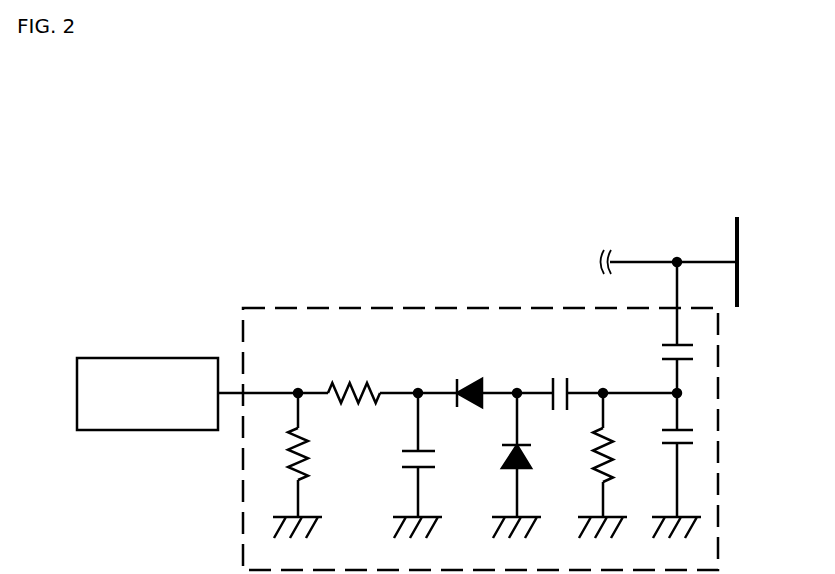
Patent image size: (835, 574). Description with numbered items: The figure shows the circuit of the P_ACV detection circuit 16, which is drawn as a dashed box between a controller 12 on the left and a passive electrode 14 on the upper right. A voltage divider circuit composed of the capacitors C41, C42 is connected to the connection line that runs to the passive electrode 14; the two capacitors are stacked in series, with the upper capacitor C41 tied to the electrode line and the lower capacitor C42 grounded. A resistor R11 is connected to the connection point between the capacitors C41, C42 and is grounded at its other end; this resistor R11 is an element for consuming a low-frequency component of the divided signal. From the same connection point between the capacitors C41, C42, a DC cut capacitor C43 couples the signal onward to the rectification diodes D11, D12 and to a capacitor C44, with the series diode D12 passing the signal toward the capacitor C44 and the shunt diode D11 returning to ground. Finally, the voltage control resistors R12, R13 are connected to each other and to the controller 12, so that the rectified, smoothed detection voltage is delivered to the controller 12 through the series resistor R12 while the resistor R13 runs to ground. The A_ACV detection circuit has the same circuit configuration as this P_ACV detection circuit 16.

The controller 12 is at (111, 357).
The passive electrode 14 is at (735, 236).
The P_ACV detection circuit 16 is at (281, 306).
The resistor R11 is at (595, 465).
The voltage control resistor R12 is at (354, 380).
The voltage control resistor R13 is at (309, 465).
The capacitor C41 is at (654, 327).
The capacitor C42 is at (665, 465).
The DC cut capacitor C43 is at (567, 381).
The capacitor C44 is at (409, 465).
The rectification diode D11 is at (509, 465).
The rectification diode D12 is at (470, 379).